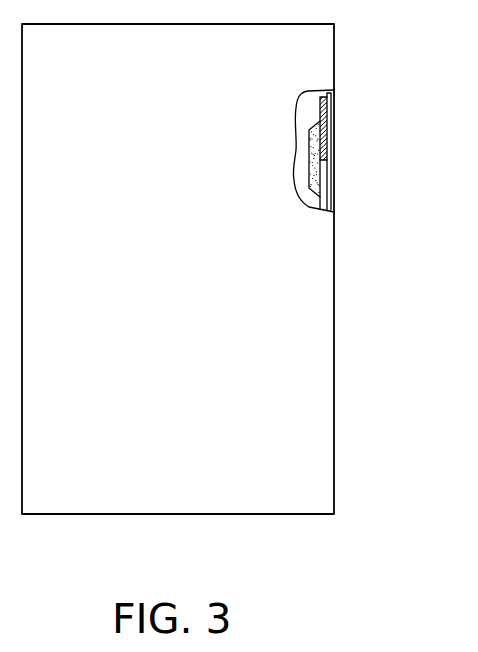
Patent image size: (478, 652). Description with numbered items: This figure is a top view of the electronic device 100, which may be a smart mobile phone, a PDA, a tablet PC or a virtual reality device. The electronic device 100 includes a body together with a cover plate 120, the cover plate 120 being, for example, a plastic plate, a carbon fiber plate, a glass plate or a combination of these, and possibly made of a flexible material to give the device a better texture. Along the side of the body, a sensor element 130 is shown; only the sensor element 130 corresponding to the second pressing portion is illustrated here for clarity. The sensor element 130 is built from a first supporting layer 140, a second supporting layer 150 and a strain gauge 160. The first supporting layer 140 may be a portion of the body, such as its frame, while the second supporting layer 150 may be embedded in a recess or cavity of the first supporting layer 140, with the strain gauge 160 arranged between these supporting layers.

The electronic device 100 is at (405, 530).
The cover plate 120 is at (330, 201).
The sensor element 130 is at (347, 138).
The first supporting layer 140 is at (310, 107).
The second supporting layer 150 is at (313, 177).
The strain gauge 160 is at (320, 113).